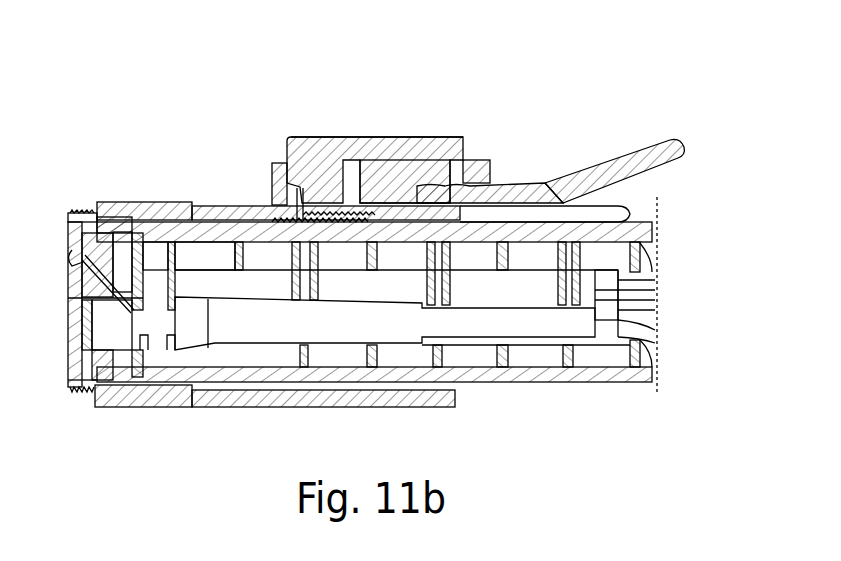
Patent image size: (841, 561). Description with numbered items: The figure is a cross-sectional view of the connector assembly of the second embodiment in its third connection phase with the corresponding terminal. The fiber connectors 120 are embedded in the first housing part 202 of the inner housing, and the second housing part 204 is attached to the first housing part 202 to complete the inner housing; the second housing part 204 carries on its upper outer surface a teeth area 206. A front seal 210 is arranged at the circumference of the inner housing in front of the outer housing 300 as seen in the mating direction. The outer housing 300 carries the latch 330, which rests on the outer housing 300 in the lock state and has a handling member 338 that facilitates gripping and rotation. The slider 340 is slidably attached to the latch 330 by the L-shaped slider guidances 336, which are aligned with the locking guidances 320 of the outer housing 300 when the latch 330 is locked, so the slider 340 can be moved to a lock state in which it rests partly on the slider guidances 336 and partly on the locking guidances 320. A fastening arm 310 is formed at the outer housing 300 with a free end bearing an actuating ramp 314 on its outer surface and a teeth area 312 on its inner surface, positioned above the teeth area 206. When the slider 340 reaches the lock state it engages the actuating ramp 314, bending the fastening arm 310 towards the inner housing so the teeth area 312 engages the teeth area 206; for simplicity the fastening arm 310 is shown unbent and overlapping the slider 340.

The fiber connector 120 is at (197, 340).
The first housing part 202 is at (541, 382).
The second housing part 204 is at (632, 227).
The teeth area 206 is at (256, 223).
The front seal 210 is at (78, 212).
The outer housing 300 is at (246, 398).
The fastening arm 310 is at (503, 170).
The teeth area 312 is at (278, 175).
The actuating ramp 314 is at (343, 137).
The locking guidance 320 is at (300, 196).
The latch 330 is at (452, 140).
The slider guidance 336 is at (486, 160).
The handling member 338 is at (634, 148).
The slider 340 is at (397, 137).